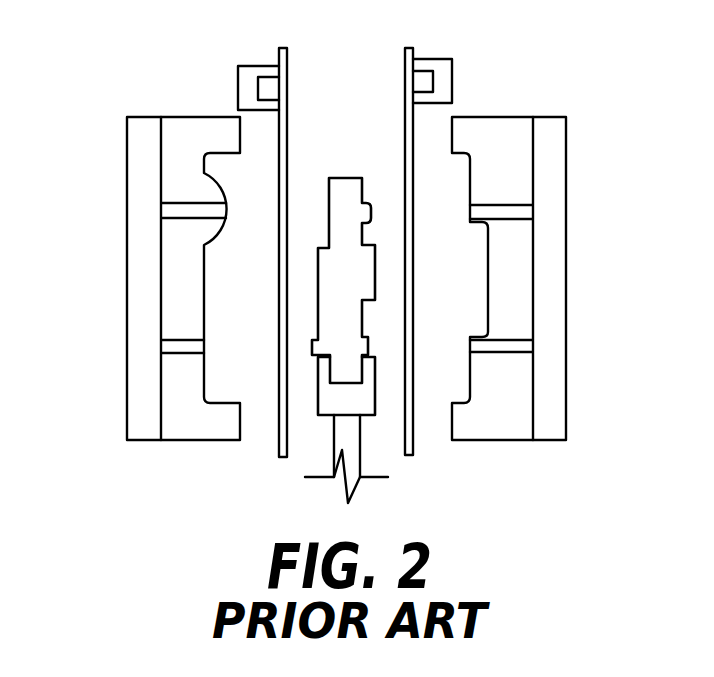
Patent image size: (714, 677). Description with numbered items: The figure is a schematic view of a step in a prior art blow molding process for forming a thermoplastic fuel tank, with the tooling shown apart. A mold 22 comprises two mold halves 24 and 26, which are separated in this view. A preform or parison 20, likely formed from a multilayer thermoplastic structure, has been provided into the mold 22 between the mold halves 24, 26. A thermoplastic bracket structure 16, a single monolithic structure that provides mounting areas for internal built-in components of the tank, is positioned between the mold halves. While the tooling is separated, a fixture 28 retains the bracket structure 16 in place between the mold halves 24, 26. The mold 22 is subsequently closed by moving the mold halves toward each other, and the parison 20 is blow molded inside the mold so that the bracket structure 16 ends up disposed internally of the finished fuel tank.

The mold 22 is at (126, 61).
The bracket structure 16 is at (329, 190).
The parison 20 is at (407, 150).
The mold half 24 is at (138, 298).
The mold half 26 is at (560, 266).
The fixture 28 is at (360, 418).